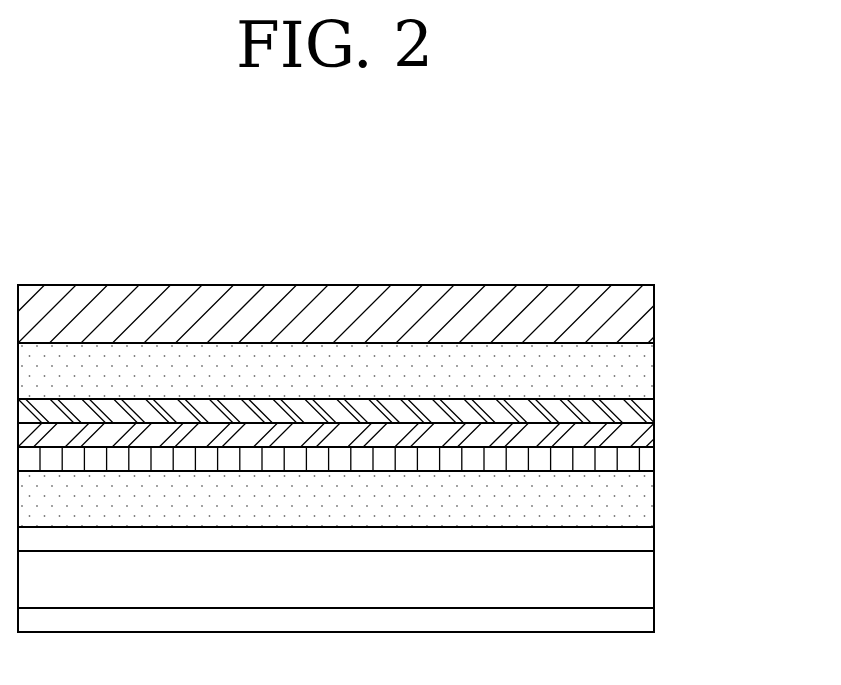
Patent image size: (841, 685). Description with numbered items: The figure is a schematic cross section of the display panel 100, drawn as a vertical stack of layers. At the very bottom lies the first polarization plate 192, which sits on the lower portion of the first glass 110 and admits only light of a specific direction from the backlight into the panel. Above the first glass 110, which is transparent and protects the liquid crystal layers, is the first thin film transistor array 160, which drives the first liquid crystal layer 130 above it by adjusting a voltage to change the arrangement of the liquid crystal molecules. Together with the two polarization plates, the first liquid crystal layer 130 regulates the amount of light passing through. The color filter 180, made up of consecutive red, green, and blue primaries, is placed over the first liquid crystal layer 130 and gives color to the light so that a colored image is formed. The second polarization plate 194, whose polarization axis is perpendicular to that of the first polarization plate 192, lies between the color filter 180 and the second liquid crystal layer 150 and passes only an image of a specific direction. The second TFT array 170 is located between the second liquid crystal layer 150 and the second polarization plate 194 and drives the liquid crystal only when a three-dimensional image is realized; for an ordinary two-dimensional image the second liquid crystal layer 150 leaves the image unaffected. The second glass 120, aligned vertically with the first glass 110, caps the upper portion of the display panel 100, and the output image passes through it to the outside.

The display panel 100 is at (354, 174).
The first glass 110 is at (644, 576).
The second glass 120 is at (644, 312).
The first liquid crystal layer 130 is at (644, 496).
The second liquid crystal layer 150 is at (644, 369).
The first thin film transistor (TFT) array 160 is at (644, 544).
The second TFT array 170 is at (644, 411).
The color filter 180 is at (644, 468).
The first polarization plate 192 is at (644, 624).
The second polarization plate 194 is at (644, 440).